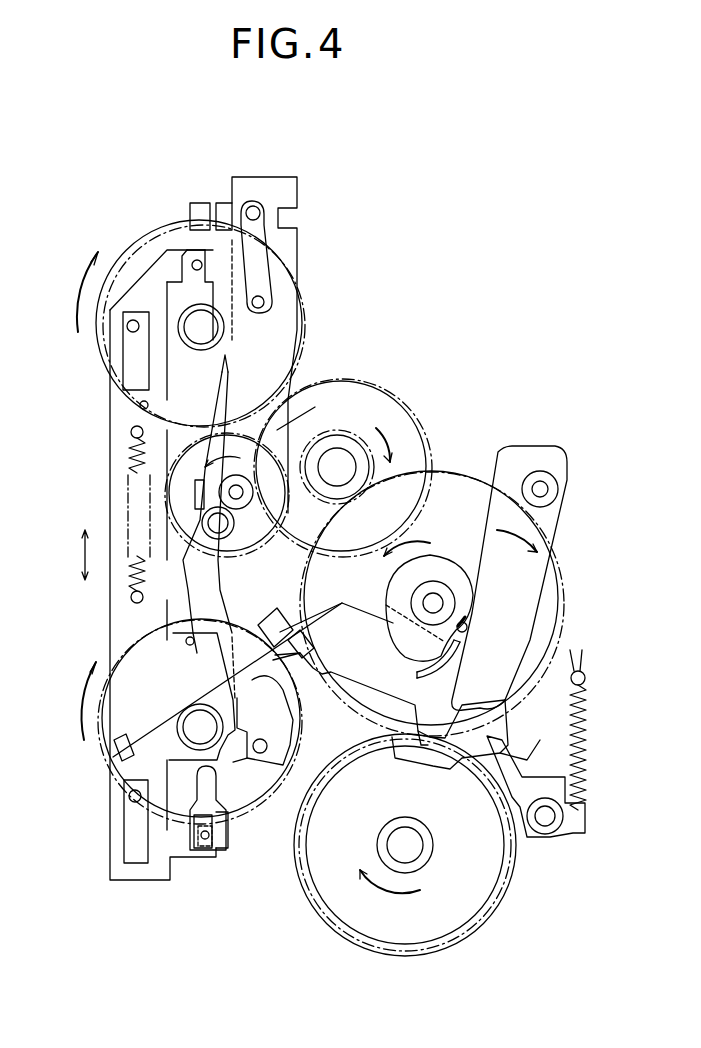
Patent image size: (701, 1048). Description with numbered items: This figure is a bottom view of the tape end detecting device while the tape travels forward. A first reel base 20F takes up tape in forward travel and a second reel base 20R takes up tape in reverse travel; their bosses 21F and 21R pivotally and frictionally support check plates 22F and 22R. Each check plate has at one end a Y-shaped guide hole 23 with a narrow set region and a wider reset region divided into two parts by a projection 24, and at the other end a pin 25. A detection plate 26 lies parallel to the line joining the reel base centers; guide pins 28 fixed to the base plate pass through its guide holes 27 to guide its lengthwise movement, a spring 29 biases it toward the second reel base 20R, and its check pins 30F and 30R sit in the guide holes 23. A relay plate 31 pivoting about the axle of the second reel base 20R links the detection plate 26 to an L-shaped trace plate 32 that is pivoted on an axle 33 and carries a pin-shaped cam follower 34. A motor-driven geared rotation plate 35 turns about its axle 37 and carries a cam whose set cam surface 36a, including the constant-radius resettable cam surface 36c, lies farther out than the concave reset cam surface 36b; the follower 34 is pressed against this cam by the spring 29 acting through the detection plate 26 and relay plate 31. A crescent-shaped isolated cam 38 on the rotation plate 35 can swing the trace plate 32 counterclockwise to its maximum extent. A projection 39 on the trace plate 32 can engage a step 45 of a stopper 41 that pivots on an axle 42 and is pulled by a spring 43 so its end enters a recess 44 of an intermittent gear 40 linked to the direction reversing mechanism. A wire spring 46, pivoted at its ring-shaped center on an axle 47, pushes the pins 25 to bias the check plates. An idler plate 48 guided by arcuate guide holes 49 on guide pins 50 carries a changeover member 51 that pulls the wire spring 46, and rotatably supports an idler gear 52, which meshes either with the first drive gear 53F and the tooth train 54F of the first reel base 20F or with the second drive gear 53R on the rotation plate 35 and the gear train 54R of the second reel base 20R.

The first reel base 20F is at (152, 222).
The second reel base 20R is at (114, 745).
The boss 21F is at (210, 328).
The boss 21R is at (190, 733).
The check plate 22F is at (218, 208).
The check plate 22R is at (228, 843).
The guide hole 23 is at (226, 210).
The projection 24 is at (198, 215).
The pin 25 is at (144, 405).
The detection plate 26 is at (118, 423).
The guide hole 27 is at (128, 378).
The guide pin 28 is at (127, 326).
The spring 29 is at (131, 466).
The check pin 30F is at (195, 265).
The check pin 30R is at (205, 840).
The relay plate 31 is at (183, 697).
The trace plate 32 is at (556, 518).
The axle 33 is at (558, 488).
The cam follower 34 is at (468, 628).
The rotation plate 35 is at (440, 470).
The set cam surface 36a is at (390, 583).
The reset cam surface 36b is at (468, 616).
The resettable cam surface 36c is at (442, 568).
The axle 37 is at (436, 603).
The isolated cam 38 is at (447, 672).
The projection 39 is at (455, 712).
The intermittent gear 40 is at (478, 895).
The stopper 41 is at (505, 755).
The axle 42 is at (545, 834).
The spring 43 is at (588, 718).
The recess 44 is at (400, 762).
The step 45 is at (480, 770).
The wire spring 46 is at (190, 592).
The axle 47 is at (218, 522).
The idler plate 48 is at (284, 252).
The arcuate guide hole 49 is at (258, 216).
The guide pin 50 is at (264, 302).
The changeover member 51 is at (195, 489).
The idler gear 52 is at (312, 395).
The first drive gear 53F is at (382, 394).
The second drive gear 53R is at (568, 612).
The tooth train 54F is at (300, 312).
The gear train 54R is at (316, 796).